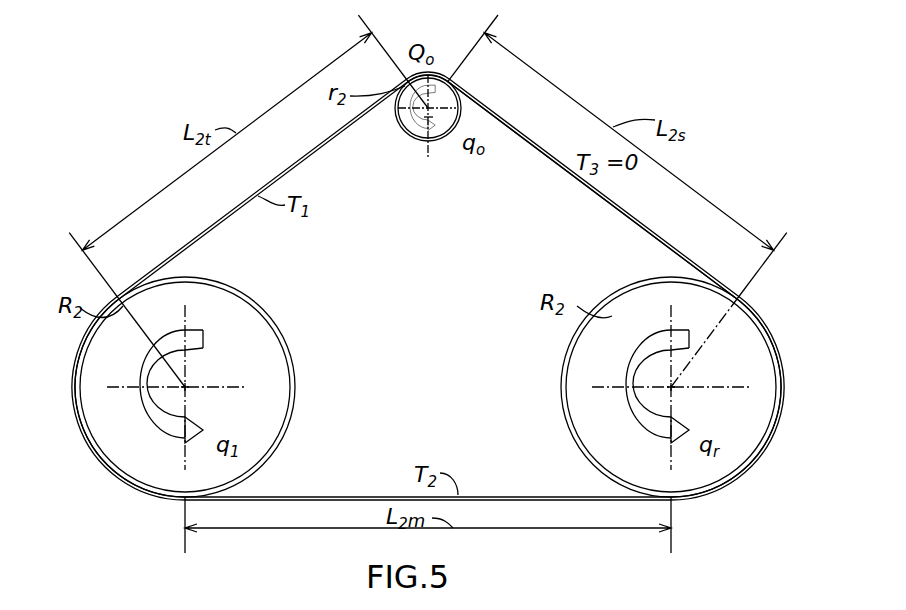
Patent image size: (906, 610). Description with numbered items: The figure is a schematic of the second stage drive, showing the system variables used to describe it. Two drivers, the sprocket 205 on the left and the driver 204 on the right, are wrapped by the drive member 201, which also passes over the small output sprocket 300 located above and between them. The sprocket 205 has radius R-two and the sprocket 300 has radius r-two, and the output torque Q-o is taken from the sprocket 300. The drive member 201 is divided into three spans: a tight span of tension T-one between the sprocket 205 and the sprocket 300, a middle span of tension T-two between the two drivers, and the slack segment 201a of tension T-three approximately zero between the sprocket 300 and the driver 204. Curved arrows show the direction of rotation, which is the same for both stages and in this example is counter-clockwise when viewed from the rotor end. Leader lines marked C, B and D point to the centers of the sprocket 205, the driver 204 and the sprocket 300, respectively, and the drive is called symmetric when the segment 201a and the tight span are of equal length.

The drive member 201 is at (555, 495).
The member segment 201a is at (612, 206).
The driver 204 is at (606, 352).
The sprocket 205 is at (152, 450).
The sprocket 300 is at (413, 130).
The left pulley rotation center C is at (185, 387).
The right pulley rotation center B is at (671, 387).
The small pulley center D is at (433, 117).